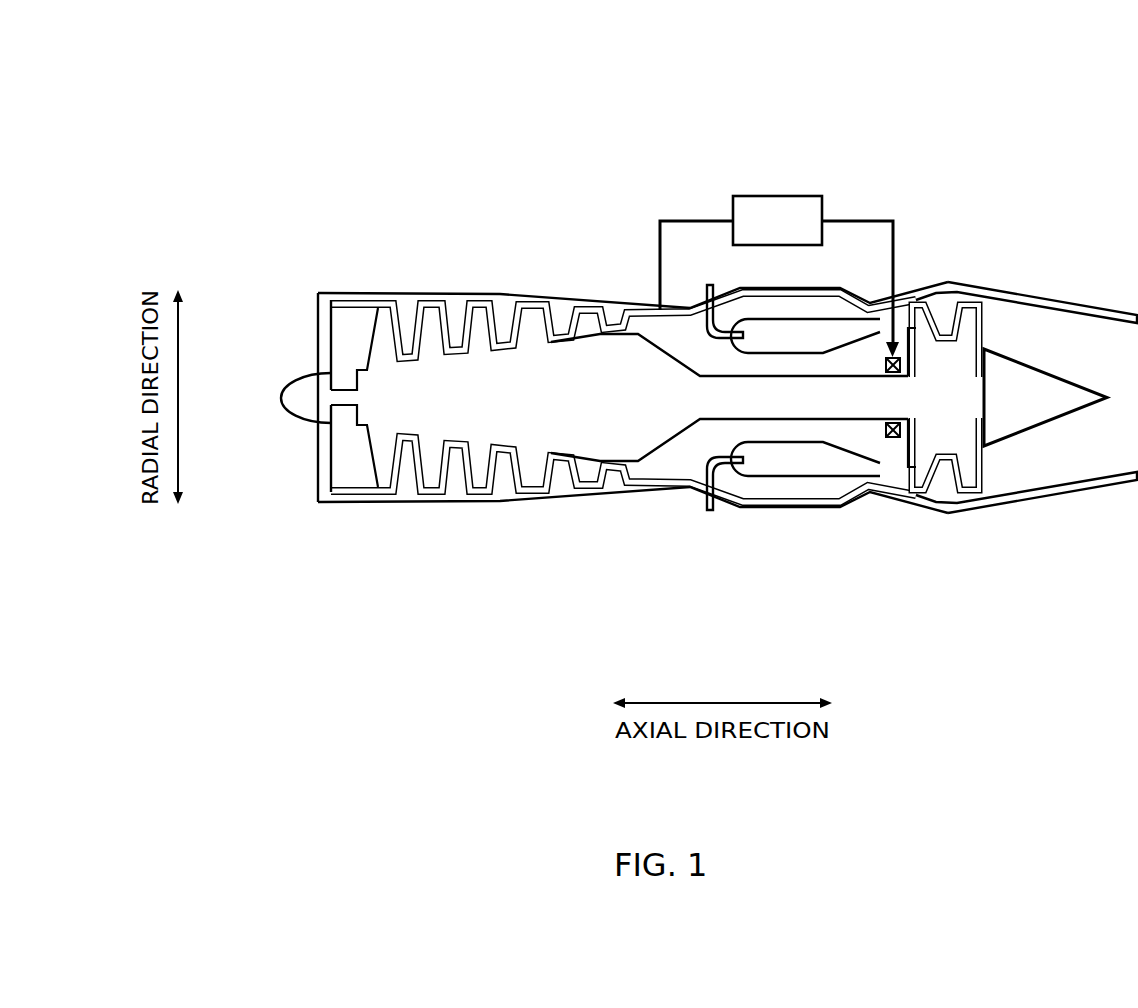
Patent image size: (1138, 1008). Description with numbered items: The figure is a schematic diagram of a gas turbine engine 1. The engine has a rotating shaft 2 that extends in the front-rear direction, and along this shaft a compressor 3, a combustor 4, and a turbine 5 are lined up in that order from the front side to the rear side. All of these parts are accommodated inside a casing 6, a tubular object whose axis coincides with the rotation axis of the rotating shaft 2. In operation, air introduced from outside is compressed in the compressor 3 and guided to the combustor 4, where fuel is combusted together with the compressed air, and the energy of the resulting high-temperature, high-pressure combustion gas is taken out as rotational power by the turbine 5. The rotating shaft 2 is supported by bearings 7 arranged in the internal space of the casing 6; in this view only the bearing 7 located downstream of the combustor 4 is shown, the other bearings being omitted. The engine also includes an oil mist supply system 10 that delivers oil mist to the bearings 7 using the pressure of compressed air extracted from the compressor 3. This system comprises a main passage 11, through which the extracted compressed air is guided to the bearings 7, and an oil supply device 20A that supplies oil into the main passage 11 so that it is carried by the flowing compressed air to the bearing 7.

The gas turbine engine 1 is at (262, 150).
The rotating shaft 2 is at (833, 405).
The compressor 3 is at (540, 470).
The combustor 4 is at (783, 467).
The turbine 5 is at (965, 490).
The casing 6 is at (1077, 297).
The bearing 7 is at (893, 437).
The oil mist supply system 10 is at (680, 172).
The main passage 11 is at (900, 280).
The oil supply device 20A is at (778, 196).